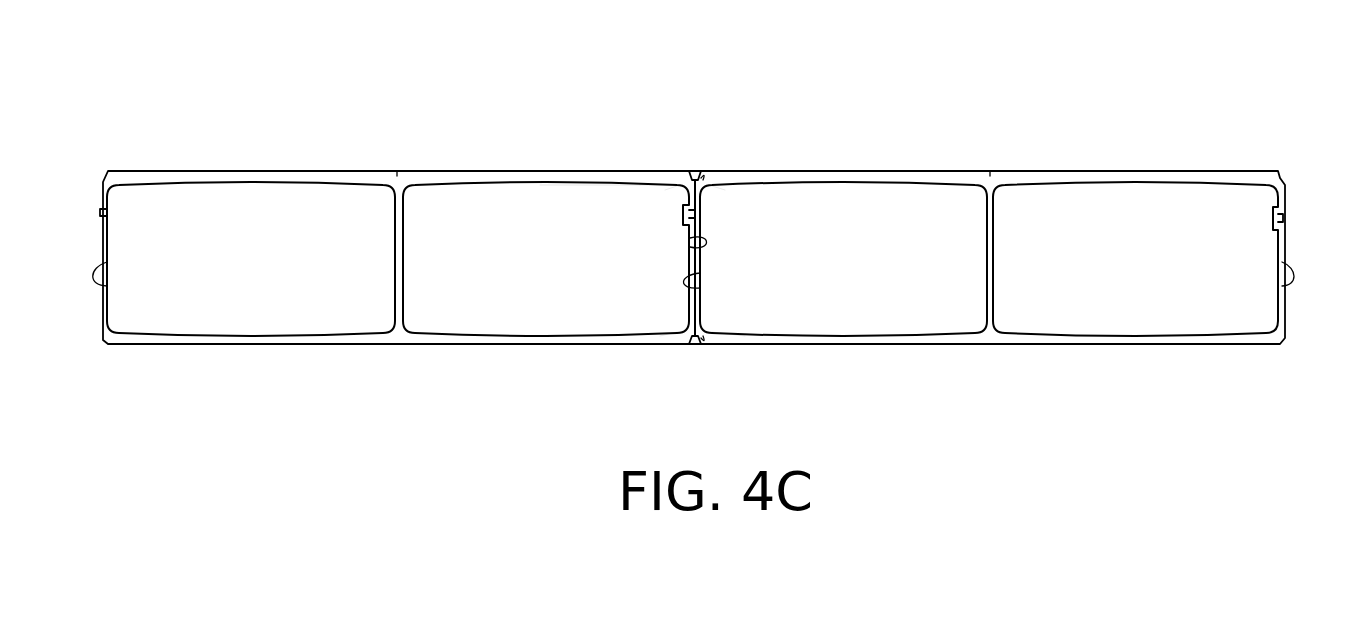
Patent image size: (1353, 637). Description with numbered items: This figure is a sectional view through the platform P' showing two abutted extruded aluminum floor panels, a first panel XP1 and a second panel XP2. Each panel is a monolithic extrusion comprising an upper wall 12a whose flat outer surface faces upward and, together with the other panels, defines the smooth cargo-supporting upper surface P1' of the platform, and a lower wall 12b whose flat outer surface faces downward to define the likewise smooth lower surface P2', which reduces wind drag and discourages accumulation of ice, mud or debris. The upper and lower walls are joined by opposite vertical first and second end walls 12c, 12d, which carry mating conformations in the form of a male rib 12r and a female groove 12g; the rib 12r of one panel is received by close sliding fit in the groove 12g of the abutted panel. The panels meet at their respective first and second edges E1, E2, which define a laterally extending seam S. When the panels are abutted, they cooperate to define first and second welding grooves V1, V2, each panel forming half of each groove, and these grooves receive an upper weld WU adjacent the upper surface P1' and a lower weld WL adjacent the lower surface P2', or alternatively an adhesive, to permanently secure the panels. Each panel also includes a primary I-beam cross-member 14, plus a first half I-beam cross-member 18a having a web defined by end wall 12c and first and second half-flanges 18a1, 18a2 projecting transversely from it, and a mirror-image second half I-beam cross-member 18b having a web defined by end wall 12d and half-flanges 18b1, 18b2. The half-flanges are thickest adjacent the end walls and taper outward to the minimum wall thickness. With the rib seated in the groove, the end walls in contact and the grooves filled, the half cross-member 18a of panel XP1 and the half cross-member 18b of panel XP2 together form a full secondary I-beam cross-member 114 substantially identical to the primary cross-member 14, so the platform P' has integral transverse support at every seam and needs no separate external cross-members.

The male rib 12r is at (100, 212).
The female groove 12g is at (1283, 218).
The upper wall 12a is at (488, 165).
The lower wall 12b is at (486, 358).
The first end wall 12c is at (108, 300).
The second end wall 12d is at (690, 303).
The primary I-beam cross-member 14 is at (397, 165).
The first half I-beam cross-member 18a is at (772, 165).
The second half I-beam cross-member 18b is at (593, 165).
The first half-flange 18a1 is at (723, 188).
The second half-flange 18a2 is at (743, 342).
The first half-flange 18b1 is at (670, 188).
The second half-flange 18b2 is at (662, 343).
The secondary I-beam cross-member 114 is at (660, 165).
The seam S is at (695, 165).
The upper weld WU is at (697, 174).
The lower weld WL is at (695, 346).
The first welding groove V1 is at (705, 178).
The second welding groove V2 is at (707, 343).
The first edge E1 is at (107, 262).
The second edge E2 is at (690, 238).
The platform P' is at (709, 211).
The upper surface P1' is at (1135, 206).
The lower surface P2' is at (1076, 380).
The first panel XP1 is at (1137, 362).
The second panel XP2 is at (253, 358).